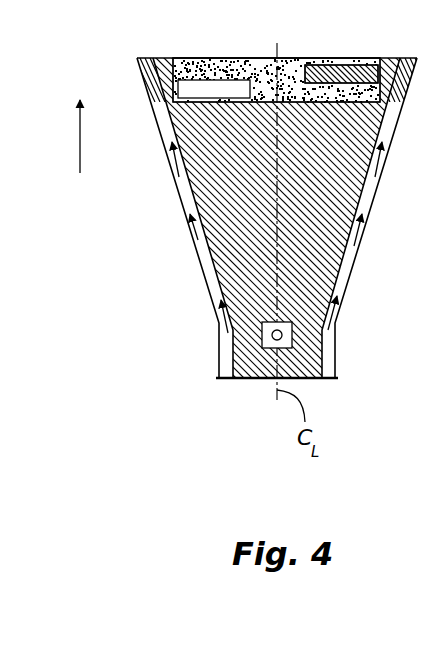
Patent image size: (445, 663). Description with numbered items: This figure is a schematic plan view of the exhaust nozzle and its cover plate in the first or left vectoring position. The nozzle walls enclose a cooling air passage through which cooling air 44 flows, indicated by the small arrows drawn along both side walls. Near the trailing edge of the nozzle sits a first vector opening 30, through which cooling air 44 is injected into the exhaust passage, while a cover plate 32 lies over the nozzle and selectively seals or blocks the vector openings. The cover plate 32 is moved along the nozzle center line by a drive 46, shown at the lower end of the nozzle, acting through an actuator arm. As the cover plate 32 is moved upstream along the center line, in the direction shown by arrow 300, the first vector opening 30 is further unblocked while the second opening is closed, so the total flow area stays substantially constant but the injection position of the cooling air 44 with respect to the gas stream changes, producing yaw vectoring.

The vector opening 30 is at (205, 82).
The cover plate 32 is at (293, 62).
The cooling air 44 is at (193, 233).
The drive 46 is at (262, 340).
The arrow 300 is at (80, 138).